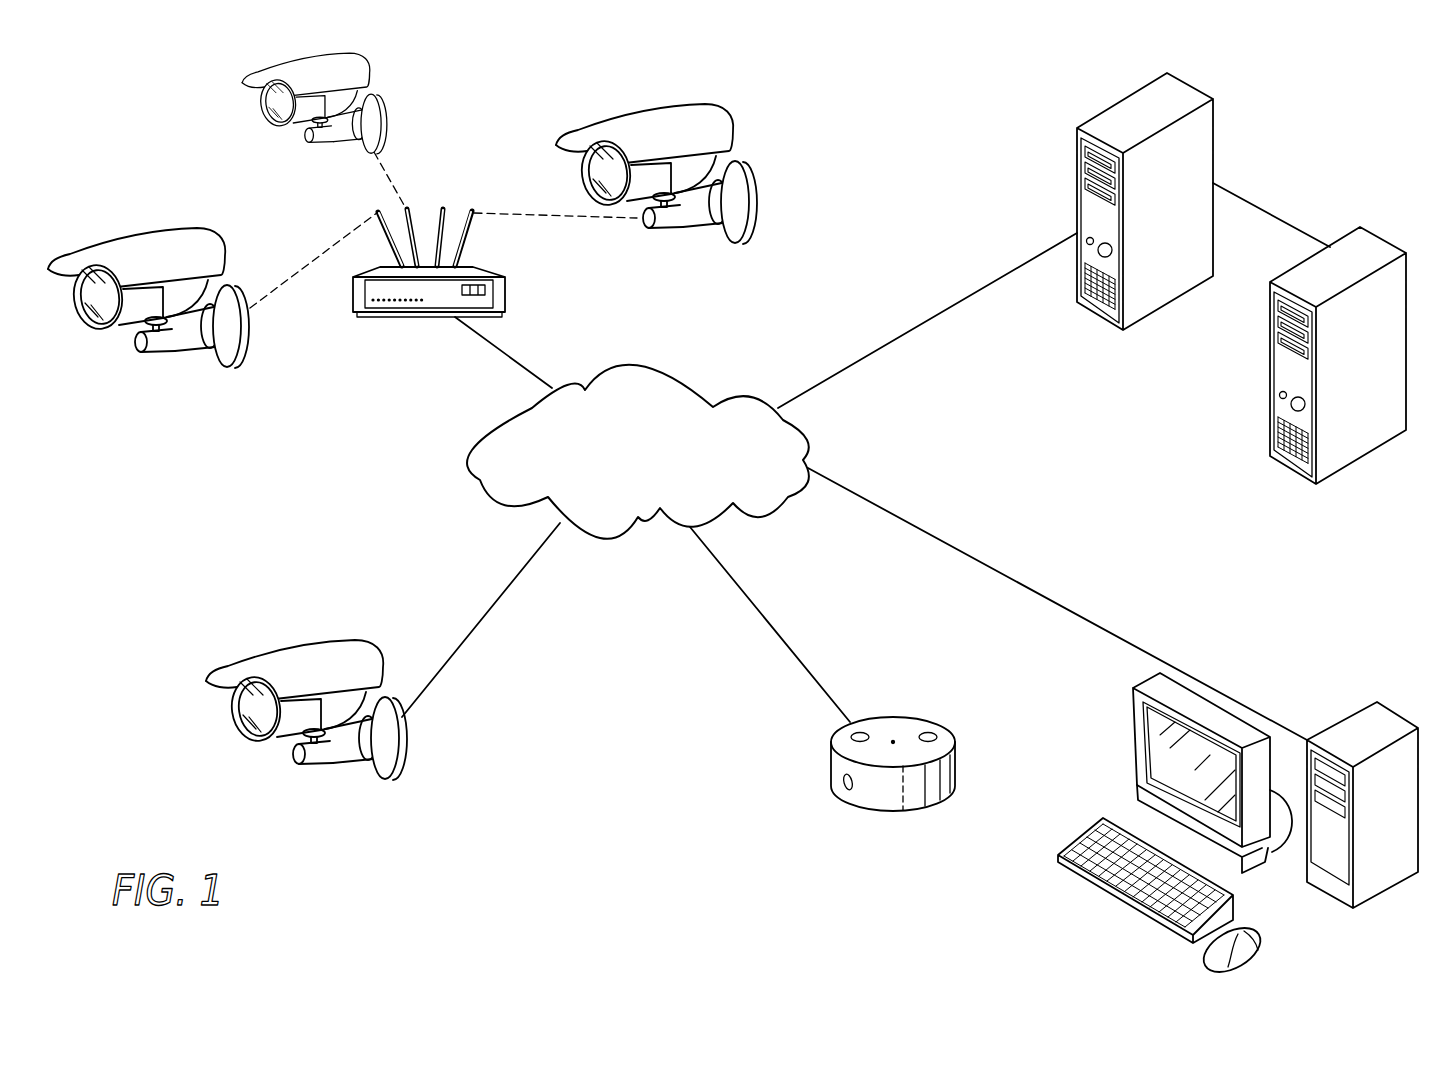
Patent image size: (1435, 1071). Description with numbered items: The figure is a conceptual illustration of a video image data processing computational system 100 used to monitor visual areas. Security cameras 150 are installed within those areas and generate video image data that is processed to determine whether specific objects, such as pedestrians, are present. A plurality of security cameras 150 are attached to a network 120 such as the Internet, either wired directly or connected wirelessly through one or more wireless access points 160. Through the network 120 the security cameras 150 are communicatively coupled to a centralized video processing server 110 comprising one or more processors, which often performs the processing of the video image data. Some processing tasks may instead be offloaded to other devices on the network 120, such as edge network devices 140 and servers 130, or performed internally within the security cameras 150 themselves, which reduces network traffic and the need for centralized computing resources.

The video image data processing computational system 100 is at (514, 789).
The video processing server 110 is at (1133, 745).
The network 120 is at (667, 365).
The servers 130 is at (1105, 106).
The edge network devices 140 is at (830, 753).
The security cameras 150 is at (142, 253).
The wireless access points 160 is at (403, 317).